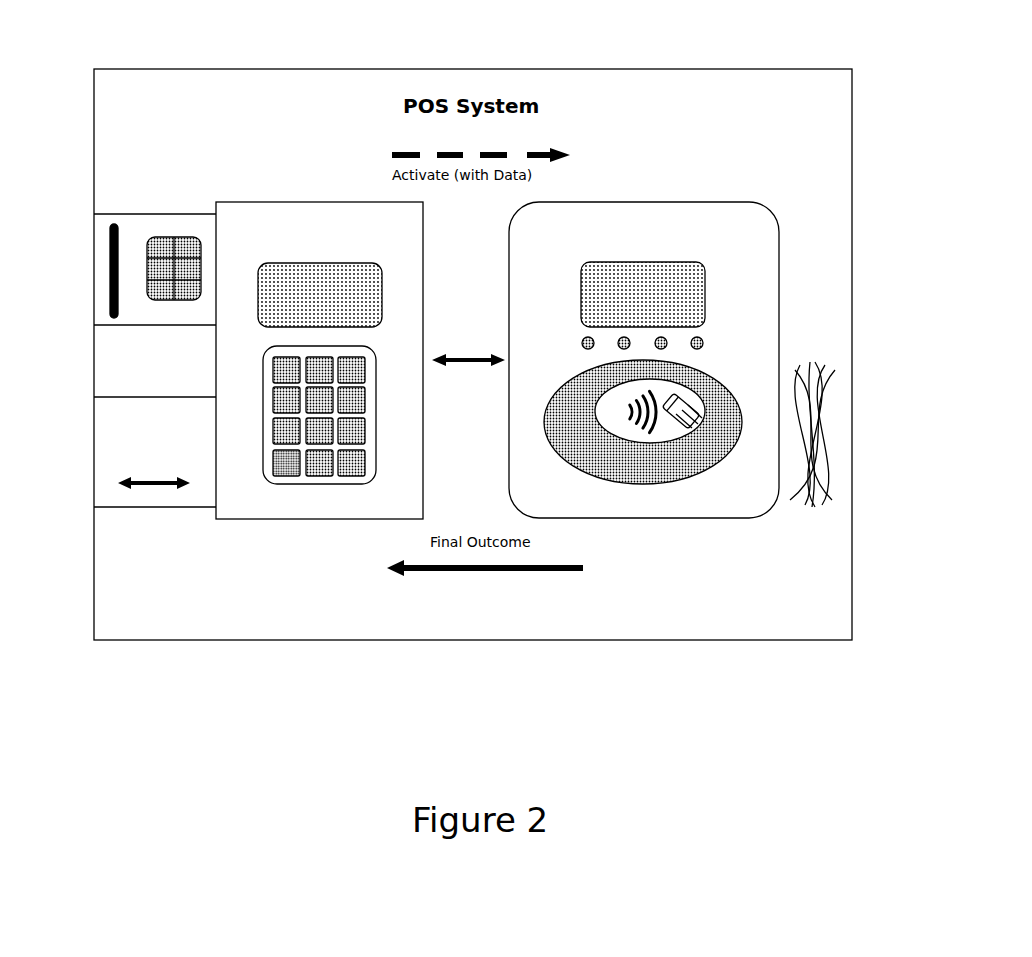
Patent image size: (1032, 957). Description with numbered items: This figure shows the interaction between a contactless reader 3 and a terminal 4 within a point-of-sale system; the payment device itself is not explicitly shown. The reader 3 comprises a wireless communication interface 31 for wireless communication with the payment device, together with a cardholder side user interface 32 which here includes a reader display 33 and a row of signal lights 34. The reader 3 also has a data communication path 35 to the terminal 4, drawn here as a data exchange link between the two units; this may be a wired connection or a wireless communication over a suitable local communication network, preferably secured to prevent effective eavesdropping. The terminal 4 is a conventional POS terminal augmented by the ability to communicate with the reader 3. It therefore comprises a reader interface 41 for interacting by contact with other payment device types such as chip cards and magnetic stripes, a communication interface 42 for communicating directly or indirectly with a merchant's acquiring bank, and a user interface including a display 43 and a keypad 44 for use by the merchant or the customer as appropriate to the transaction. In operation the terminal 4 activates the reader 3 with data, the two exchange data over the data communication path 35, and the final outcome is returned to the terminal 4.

The reader 3 is at (722, 227).
The wireless communication interface 31 is at (663, 478).
The cardholder side user interface 32 is at (748, 313).
The reader display 33 is at (710, 280).
The signal lights 34 is at (715, 345).
The data communication path 35 is at (464, 362).
The terminal 4 is at (243, 217).
The reader interface 41 is at (205, 298).
The communication interface 42 is at (135, 503).
The display 43 is at (273, 258).
The keypad 44 is at (303, 481).